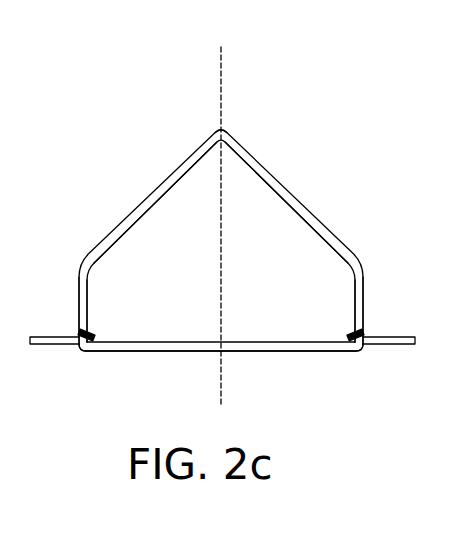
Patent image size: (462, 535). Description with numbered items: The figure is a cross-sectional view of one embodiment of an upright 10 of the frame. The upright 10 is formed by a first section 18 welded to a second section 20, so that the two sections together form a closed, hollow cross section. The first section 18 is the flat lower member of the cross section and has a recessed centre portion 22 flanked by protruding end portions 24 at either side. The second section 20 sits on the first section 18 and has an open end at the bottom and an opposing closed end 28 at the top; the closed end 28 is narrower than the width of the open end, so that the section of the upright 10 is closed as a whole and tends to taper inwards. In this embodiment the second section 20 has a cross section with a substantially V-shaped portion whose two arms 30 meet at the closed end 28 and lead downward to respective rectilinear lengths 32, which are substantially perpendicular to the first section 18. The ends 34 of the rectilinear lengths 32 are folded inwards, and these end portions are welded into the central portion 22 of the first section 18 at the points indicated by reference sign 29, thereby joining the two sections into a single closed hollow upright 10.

The upright 10 is at (344, 200).
The first section 18 is at (187, 361).
The second section 20 is at (273, 150).
The central portion 22 is at (278, 353).
The end portions 24 is at (47, 346).
The closed end 28 is at (222, 126).
The welding points 29 is at (79, 335).
The arms 30 is at (193, 164).
The rectilinear lengths 32 is at (90, 293).
The ends 34 is at (92, 333).